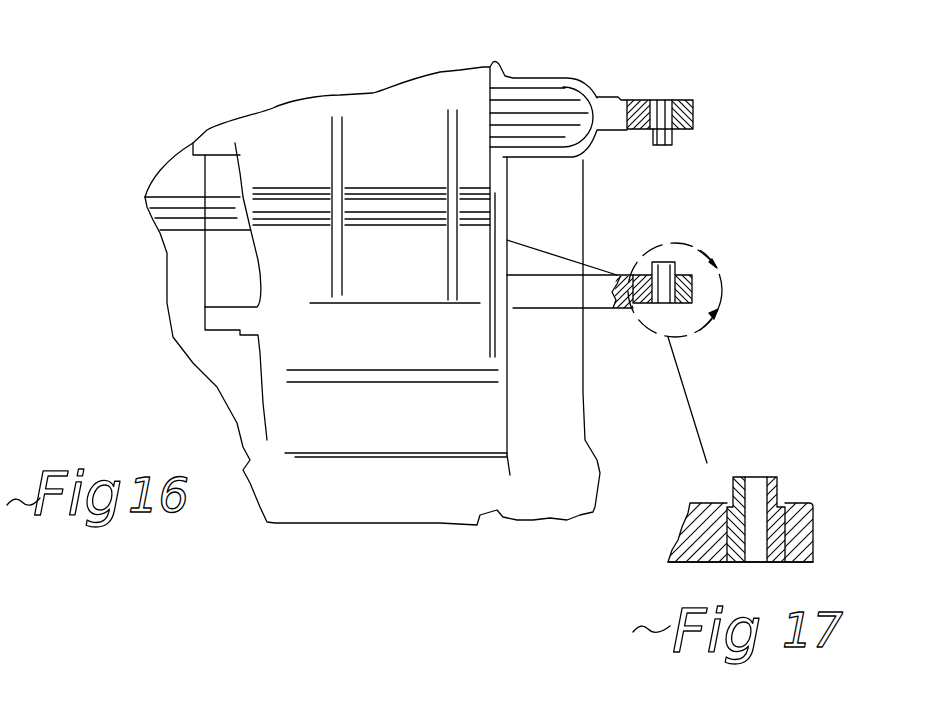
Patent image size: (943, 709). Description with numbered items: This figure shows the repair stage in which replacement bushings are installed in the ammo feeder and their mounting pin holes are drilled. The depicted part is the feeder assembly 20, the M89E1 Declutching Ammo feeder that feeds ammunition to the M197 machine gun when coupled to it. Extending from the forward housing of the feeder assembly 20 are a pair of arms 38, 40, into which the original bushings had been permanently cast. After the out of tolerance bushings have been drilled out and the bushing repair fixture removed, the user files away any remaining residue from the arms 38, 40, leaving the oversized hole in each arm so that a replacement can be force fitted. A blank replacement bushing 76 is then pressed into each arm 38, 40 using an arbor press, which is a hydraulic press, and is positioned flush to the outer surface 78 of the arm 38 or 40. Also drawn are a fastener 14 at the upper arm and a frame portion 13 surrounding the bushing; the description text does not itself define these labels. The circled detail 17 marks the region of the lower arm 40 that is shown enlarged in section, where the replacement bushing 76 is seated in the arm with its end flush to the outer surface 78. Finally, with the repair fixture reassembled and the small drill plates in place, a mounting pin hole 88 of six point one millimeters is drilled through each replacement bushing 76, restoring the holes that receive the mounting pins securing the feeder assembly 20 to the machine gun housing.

In FIG. 16, the feeder assembly 20 is at (273, 108).
In FIG. 16, the arm 38 is at (613, 97).
In FIG. 16, the bolt 14 is at (663, 145).
In FIG. 16, the replacement bushing 76 is at (673, 262).
In FIG. 17, the replacement bushing 76 is at (777, 487).
In FIG. 16, the detail view circle 17 is at (686, 353).
In FIG. 16, the arm 40 is at (607, 312).
In FIG. 17, the mounting pin hole 88 is at (746, 498).
In FIG. 17, the frame member 13 is at (810, 527).
In FIG. 17, the outer surface 78 is at (697, 562).